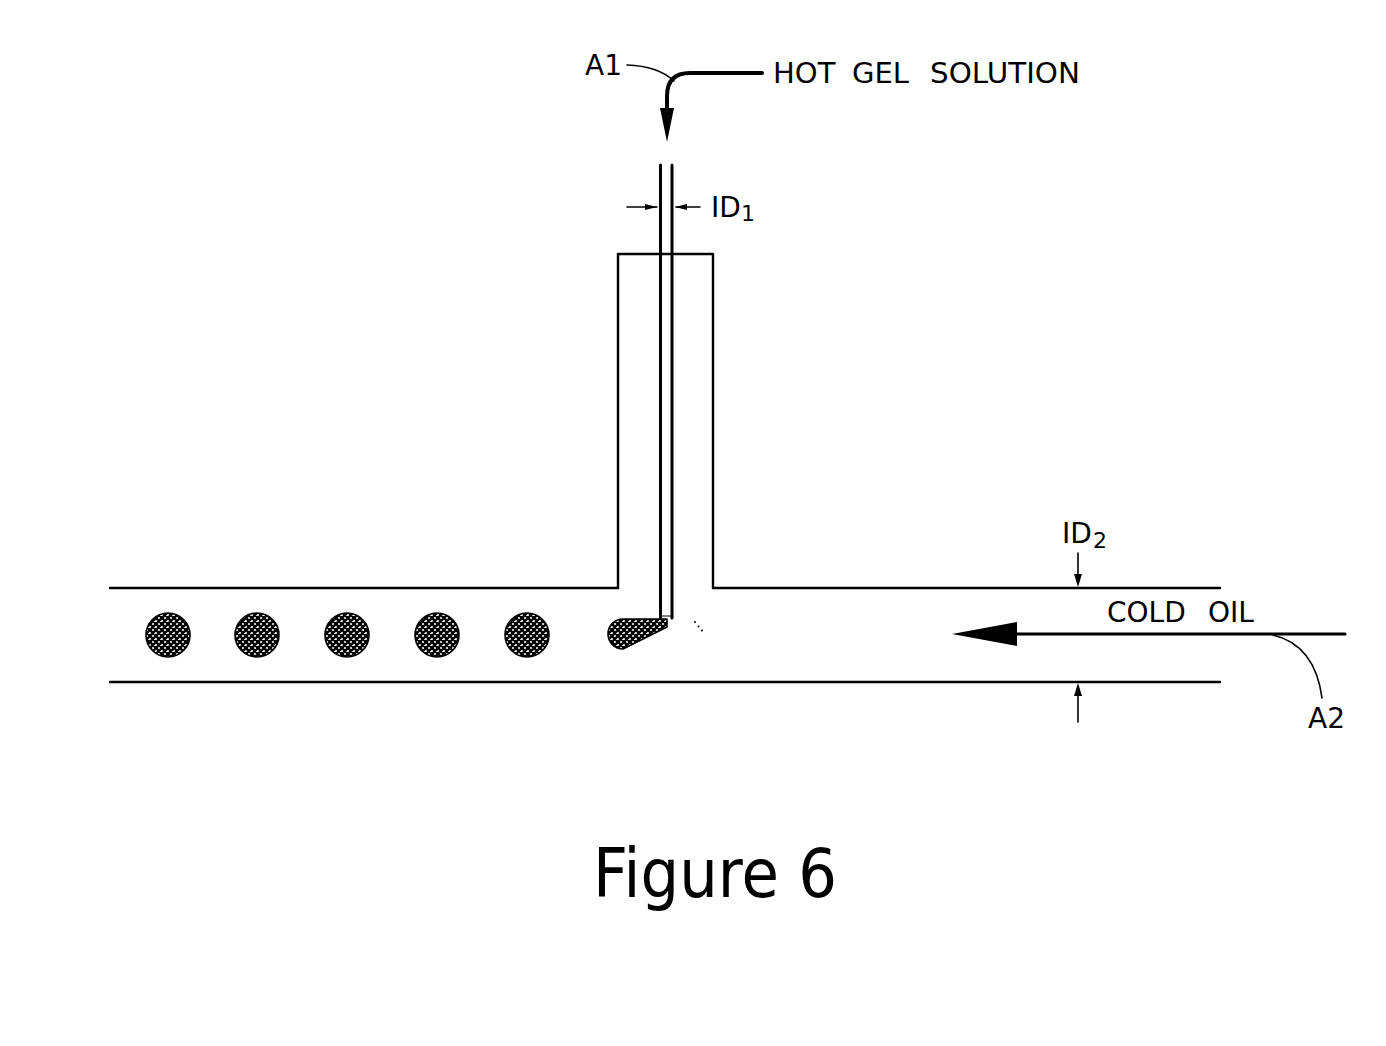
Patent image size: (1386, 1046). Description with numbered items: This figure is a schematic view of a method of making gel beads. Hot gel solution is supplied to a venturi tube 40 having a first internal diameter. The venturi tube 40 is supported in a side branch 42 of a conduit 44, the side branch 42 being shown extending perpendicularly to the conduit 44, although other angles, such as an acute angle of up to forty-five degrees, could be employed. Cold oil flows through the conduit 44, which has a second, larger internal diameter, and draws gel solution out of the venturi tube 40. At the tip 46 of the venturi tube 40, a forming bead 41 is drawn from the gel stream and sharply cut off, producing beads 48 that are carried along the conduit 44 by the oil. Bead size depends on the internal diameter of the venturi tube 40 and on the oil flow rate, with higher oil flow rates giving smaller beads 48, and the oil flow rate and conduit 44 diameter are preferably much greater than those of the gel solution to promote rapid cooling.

The venturi tube 40 is at (673, 392).
The forming gel drop 41 is at (658, 630).
The side branch 42 is at (618, 330).
The conduit 44 is at (872, 587).
The tip 46 is at (668, 618).
The beads 48 is at (253, 613).